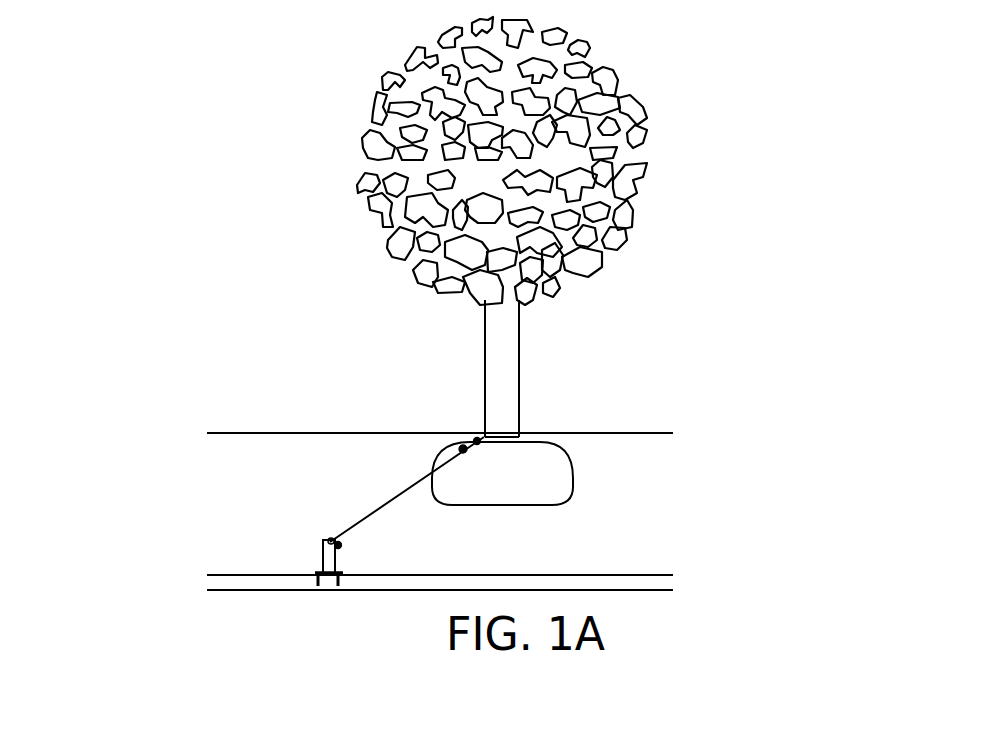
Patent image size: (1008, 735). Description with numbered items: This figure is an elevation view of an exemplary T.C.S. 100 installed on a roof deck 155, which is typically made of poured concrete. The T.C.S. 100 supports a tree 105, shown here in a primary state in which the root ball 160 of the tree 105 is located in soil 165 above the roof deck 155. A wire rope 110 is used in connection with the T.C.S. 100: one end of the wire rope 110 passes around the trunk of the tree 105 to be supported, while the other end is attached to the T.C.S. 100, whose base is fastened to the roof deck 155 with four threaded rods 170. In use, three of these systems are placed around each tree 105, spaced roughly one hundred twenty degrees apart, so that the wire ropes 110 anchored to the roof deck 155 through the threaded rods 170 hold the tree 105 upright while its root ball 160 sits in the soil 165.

The T.C.S. 100 is at (323, 539).
The tree 105 is at (408, 212).
The wire rope 110 is at (393, 493).
The roof deck 155 is at (226, 580).
The root ball 160 is at (534, 469).
The soil 165 is at (642, 522).
The threaded rods 170 is at (334, 590).